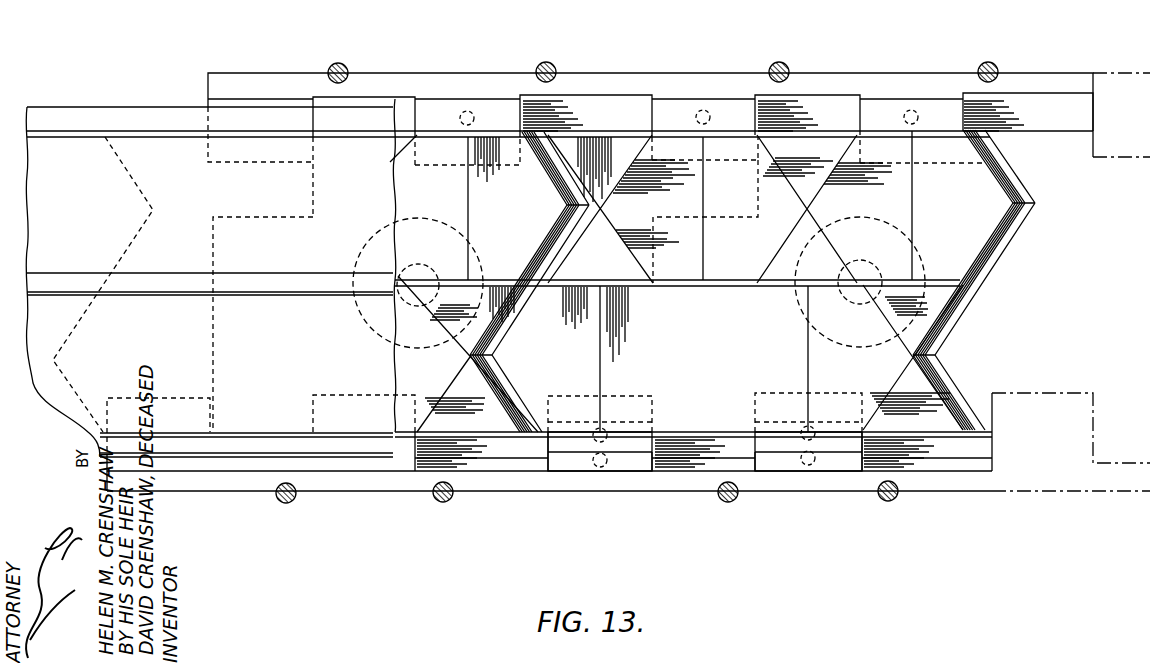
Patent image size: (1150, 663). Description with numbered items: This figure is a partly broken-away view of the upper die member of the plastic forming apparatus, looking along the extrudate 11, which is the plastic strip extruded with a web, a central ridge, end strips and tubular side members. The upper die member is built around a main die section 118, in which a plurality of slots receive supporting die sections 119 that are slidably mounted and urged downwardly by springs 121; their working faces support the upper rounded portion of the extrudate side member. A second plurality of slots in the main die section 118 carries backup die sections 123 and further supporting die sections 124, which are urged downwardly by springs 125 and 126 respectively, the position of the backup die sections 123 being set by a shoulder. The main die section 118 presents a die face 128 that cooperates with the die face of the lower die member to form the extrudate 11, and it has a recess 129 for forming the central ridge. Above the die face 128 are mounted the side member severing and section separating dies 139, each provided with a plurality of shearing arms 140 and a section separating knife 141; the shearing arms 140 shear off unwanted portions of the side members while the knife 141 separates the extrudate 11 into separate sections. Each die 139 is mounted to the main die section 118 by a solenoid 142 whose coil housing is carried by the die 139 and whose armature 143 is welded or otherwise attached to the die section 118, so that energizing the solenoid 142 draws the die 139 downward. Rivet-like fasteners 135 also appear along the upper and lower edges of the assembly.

The extrudate 11 is at (99, 107).
The main die section 118 is at (253, 73).
The supporting die sections 119 is at (727, 108).
The springs 121 is at (471, 108).
The backup die sections 123 is at (553, 440).
The supporting die sections 124 is at (575, 463).
The springs 125 is at (822, 440).
The springs 126 is at (808, 463).
The die face 128 is at (992, 242).
The recess 129 is at (963, 307).
The rivet 135 is at (344, 66).
The side member severing and section separating dies 139 is at (230, 217).
The shearing arms 140 is at (403, 108).
The section separating knife 141 is at (767, 281).
The solenoid 142 is at (497, 229).
The armature 143 is at (440, 238).